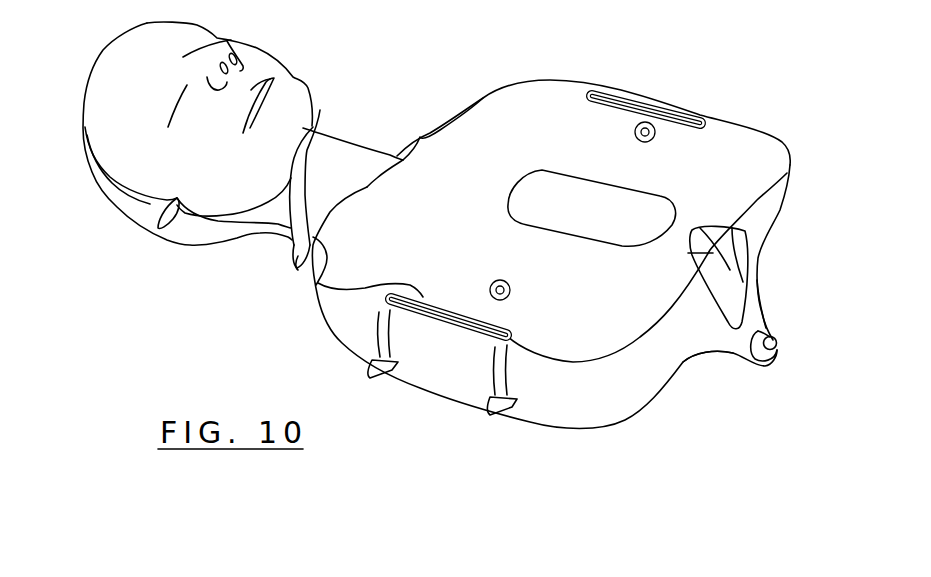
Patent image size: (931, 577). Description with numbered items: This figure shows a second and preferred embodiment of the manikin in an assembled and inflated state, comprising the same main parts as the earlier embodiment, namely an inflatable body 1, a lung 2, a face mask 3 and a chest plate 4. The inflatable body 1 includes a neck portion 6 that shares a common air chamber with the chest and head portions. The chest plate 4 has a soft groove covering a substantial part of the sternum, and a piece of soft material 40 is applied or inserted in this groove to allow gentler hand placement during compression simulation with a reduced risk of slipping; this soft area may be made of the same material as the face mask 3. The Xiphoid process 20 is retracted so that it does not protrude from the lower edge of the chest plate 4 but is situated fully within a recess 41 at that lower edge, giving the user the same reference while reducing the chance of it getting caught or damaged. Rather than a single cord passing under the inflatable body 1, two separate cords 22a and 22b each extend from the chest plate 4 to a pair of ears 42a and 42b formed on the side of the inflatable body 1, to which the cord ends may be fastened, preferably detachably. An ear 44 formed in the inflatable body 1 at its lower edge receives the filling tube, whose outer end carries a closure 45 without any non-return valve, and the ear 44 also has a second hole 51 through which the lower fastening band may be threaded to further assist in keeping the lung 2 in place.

The inflatable body 1 is at (640, 390).
The lung 2 is at (363, 163).
The face mask 3 is at (312, 95).
The chest plate 4 is at (495, 100).
The neck portion 6 is at (273, 207).
The Xiphoid process 20 is at (713, 247).
The cord 22a is at (370, 288).
The cord 22b is at (623, 96).
The piece of soft material 40 is at (555, 187).
The recess 41 is at (732, 228).
The ear 42a is at (390, 367).
The ear 42b is at (504, 400).
The ear 44 is at (733, 345).
The closure 45 is at (777, 343).
The second hole 51 is at (745, 303).